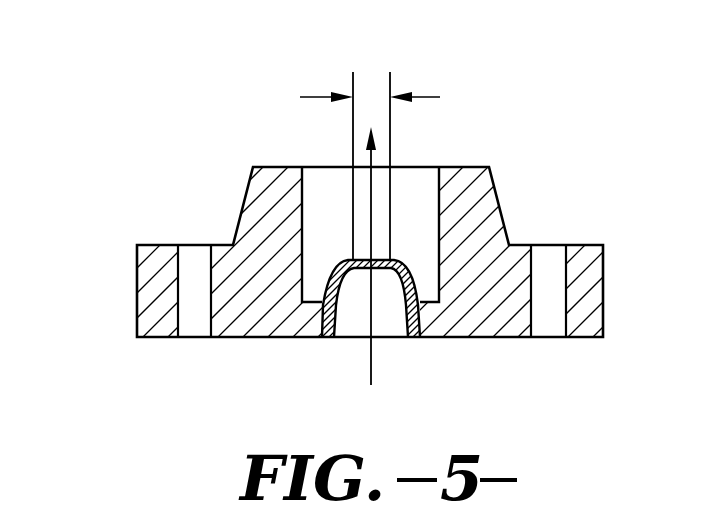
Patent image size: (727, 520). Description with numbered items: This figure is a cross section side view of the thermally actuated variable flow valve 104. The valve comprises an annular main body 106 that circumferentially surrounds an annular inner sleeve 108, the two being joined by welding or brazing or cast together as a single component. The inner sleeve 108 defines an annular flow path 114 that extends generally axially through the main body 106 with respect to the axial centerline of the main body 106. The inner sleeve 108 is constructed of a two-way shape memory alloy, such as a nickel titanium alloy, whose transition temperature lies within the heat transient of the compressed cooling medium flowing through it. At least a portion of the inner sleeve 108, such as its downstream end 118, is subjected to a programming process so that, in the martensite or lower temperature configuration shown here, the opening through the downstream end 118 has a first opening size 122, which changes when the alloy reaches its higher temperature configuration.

The variable flow valve 104 is at (112, 122).
The annular main body 106 is at (604, 290).
The annular inner sleeve 108 is at (403, 316).
The annular flow path 114 is at (368, 355).
The downstream end 118 is at (392, 262).
The first opening size 122 is at (369, 98).